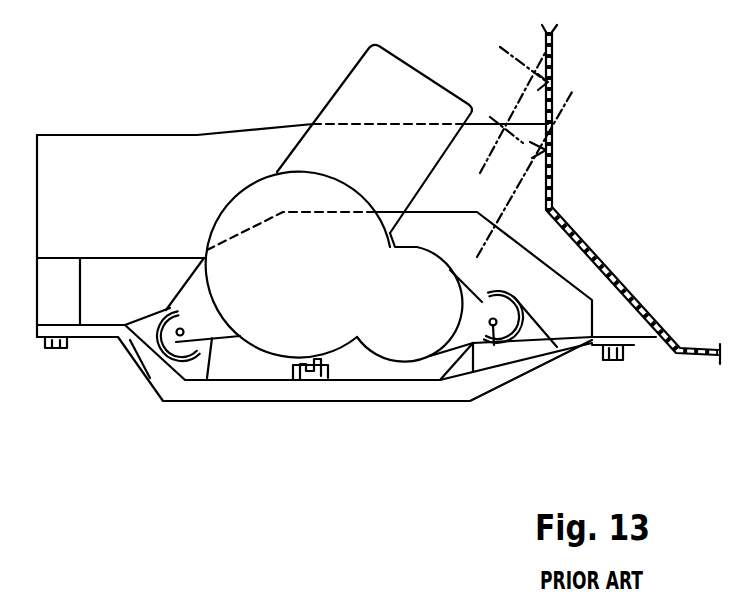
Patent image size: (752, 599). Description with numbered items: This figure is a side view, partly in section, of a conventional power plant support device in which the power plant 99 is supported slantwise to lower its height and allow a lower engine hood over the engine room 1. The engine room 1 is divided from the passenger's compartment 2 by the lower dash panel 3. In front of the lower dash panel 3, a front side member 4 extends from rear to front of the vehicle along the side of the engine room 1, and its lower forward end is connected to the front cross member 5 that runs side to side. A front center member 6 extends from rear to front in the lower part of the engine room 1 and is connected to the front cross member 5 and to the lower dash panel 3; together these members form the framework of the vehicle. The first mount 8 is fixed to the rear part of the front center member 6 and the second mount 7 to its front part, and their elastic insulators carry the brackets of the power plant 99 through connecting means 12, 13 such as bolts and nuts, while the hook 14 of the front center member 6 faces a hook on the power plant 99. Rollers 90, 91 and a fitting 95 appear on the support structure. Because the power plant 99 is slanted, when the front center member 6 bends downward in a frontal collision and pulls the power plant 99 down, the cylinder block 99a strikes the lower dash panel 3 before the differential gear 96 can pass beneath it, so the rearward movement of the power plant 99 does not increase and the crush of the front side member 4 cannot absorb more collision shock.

The engine room 1 is at (120, 83).
The passenger's compartment 2 is at (636, 125).
The lower dash panel 3 is at (587, 255).
The front side member 4 is at (80, 152).
The front cross member 5 is at (43, 300).
The front center member 6 is at (222, 402).
The second mount 7 is at (145, 330).
The first mount 8 is at (533, 345).
The connecting means 12 is at (140, 365).
The connecting means 13 is at (493, 326).
The hook 14 is at (292, 382).
The left roller 90 is at (190, 300).
The right roller 91 is at (500, 290).
The bracket fitting 95 is at (328, 368).
The differential gear 96 is at (440, 350).
The power plant 99 is at (240, 209).
The cylinder block 99a is at (430, 77).